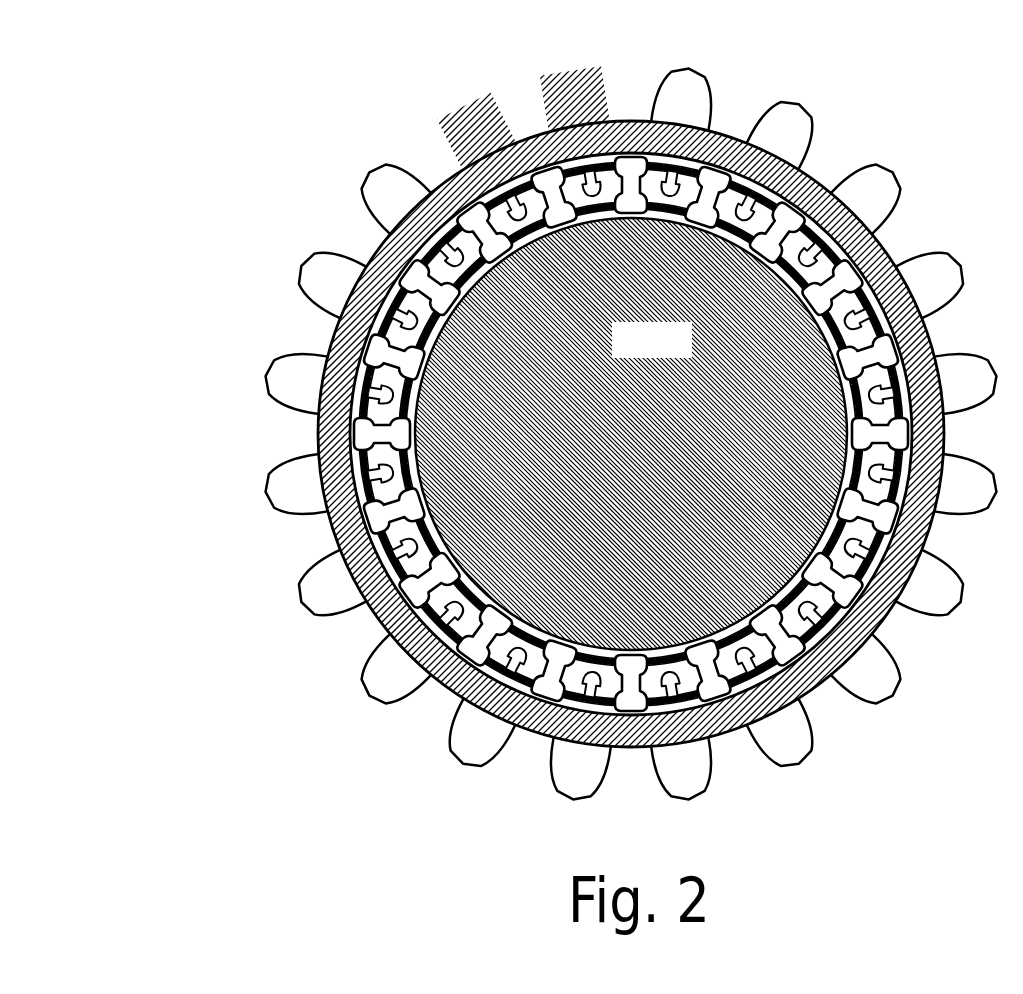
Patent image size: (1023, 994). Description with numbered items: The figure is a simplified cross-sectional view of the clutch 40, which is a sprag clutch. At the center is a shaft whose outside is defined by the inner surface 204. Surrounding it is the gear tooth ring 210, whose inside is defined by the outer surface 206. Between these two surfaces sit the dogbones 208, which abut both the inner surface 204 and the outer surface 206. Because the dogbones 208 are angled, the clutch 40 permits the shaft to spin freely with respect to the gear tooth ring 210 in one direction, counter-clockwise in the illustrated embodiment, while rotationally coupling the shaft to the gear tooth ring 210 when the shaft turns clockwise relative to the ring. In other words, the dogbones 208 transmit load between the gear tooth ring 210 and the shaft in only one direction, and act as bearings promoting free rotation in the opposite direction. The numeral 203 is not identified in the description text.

The clutch 40 is at (901, 120).
The rotor 203 is at (538, 360).
The inner surface 204 is at (669, 216).
The outer surface 206 is at (521, 178).
The dogbones 208 is at (400, 590).
The gear tooth ring 210 is at (297, 488).